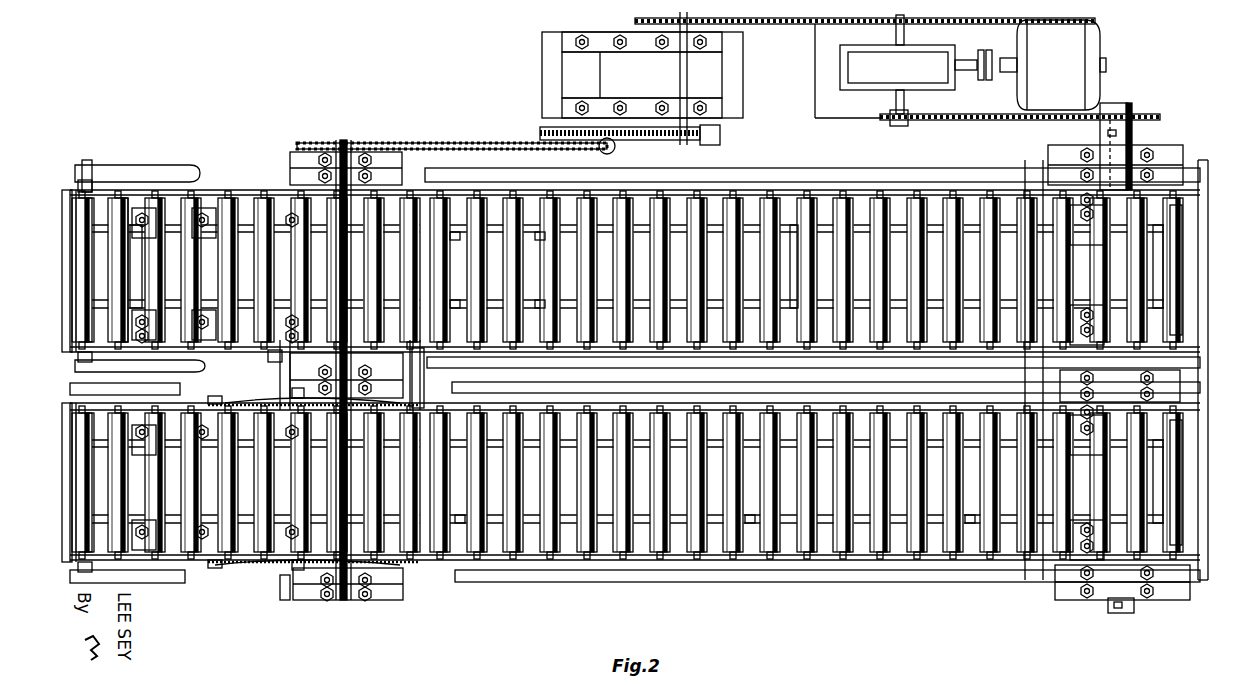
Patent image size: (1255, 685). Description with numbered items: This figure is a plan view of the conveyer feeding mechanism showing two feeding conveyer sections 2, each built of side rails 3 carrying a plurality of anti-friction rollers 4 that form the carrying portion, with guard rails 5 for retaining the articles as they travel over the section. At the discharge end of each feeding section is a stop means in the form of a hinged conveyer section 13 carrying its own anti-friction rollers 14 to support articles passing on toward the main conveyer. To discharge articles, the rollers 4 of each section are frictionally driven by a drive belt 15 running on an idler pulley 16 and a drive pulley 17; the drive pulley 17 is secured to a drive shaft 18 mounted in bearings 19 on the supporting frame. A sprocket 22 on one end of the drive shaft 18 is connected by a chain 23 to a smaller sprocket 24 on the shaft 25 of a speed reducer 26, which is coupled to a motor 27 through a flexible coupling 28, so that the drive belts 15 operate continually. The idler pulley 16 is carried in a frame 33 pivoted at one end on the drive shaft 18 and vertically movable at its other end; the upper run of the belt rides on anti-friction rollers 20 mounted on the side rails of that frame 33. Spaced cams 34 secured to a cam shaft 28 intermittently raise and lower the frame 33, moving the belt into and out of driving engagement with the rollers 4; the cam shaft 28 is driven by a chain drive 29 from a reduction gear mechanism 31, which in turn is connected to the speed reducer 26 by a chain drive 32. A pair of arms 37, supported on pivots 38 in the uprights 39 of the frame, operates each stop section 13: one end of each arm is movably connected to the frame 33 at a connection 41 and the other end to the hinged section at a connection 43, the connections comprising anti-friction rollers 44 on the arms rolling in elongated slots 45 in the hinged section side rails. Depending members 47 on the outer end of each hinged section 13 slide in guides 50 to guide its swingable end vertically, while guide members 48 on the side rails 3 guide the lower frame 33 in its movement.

The feeding conveyer section 2 is at (740, 186).
The side rails 3 is at (650, 196).
The anti-friction rollers 4 is at (582, 200).
The guard rails 5 is at (95, 190).
The hinged conveyer section 13 is at (68, 238).
The anti-friction rollers 14 is at (262, 245).
The drive belt 15 is at (135, 285).
The idler pulley 16 is at (128, 190).
The drive pulley 17 is at (1165, 235).
The drive shaft 18 is at (1112, 103).
The bearings 19 is at (1135, 145).
The anti-friction rollers 20 is at (450, 235).
The sprocket 22 is at (1132, 103).
The chain 23 is at (1005, 120).
The smaller sprocket 24 is at (895, 125).
The shaft 25 is at (895, 106).
The speed reducer 26 is at (835, 58).
The motor 27 is at (1080, 52).
The cam shaft 28 is at (335, 143).
The chain drive 29 is at (490, 140).
The reduction gear mechanism 31 is at (580, 70).
The chain drive 32 is at (776, 30).
The frame 33 is at (172, 218).
The cams 34 is at (312, 170).
The arms 37 is at (280, 392).
The pivots 38 is at (296, 394).
The uprights 39 is at (283, 600).
The connection 41 is at (398, 185).
The connection 43 is at (222, 400).
The anti-friction rollers 44 is at (225, 403).
The slots 45 is at (232, 565).
The depending members 47 is at (80, 185).
The guide members 48 is at (425, 380).
The guides 50 is at (85, 190).